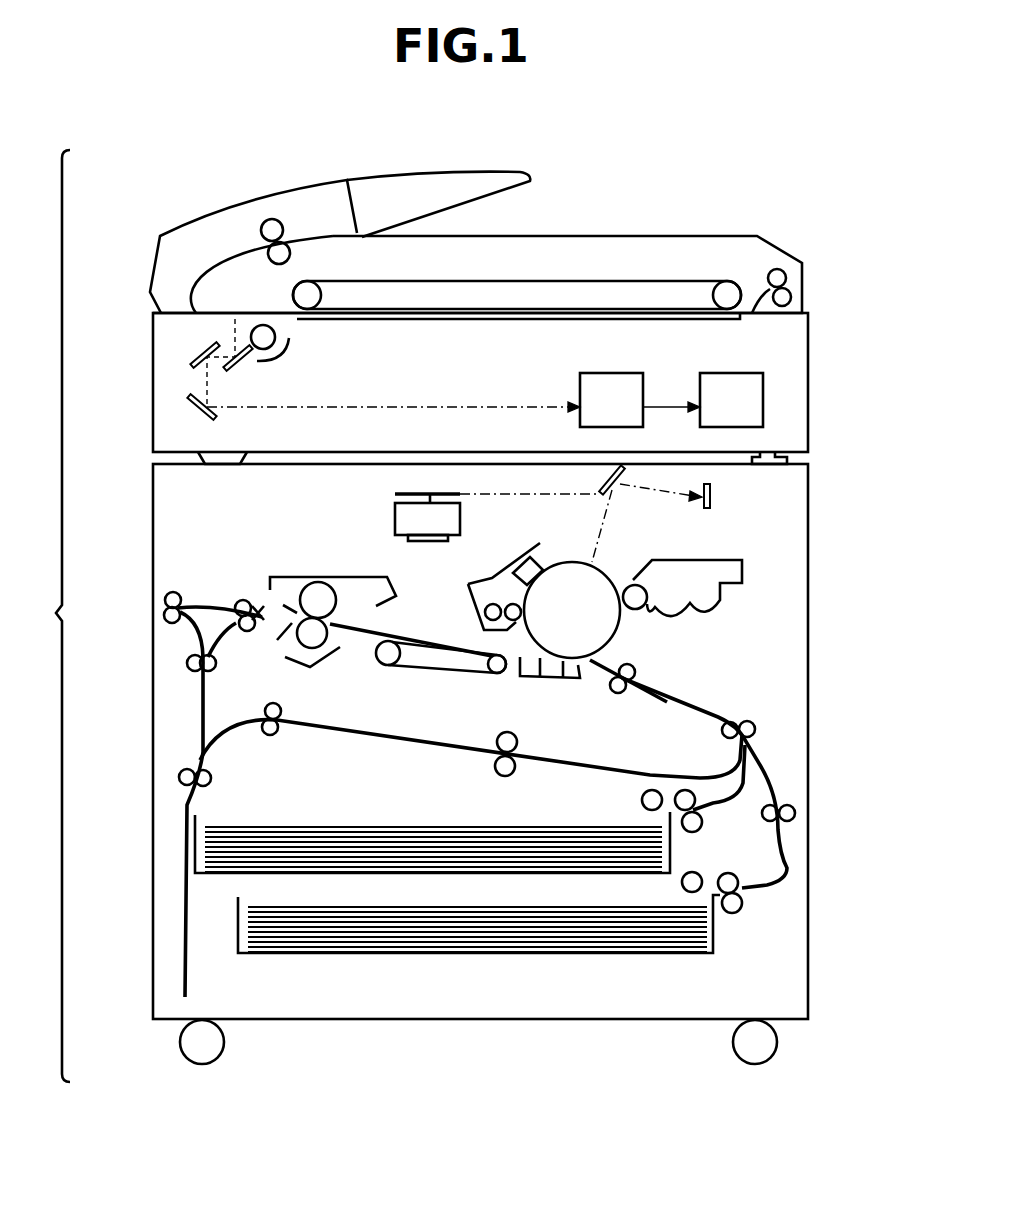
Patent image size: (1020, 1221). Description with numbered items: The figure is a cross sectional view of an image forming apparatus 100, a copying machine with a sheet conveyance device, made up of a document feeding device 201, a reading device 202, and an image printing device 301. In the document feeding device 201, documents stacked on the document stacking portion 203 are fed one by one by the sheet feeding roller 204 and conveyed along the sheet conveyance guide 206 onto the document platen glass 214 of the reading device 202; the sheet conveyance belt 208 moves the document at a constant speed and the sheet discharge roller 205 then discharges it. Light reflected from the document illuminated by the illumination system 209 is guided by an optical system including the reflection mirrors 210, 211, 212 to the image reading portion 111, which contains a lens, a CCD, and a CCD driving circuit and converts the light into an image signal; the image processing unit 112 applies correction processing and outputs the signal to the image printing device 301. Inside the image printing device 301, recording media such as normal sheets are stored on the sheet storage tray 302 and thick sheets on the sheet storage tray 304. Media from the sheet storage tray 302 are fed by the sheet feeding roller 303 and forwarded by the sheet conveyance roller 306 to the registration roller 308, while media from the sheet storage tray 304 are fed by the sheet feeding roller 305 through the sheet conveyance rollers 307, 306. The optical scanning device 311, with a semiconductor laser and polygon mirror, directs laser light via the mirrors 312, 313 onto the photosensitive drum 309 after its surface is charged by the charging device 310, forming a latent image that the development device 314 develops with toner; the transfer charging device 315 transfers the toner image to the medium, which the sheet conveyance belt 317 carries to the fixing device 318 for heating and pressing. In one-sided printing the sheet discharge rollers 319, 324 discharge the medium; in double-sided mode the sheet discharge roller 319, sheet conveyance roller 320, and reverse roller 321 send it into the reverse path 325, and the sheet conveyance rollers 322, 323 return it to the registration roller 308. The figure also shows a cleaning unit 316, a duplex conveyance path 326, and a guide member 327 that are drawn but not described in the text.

The image forming apparatus 100 is at (37, 616).
The document feeding device 201 is at (784, 230).
The reading device 202 is at (824, 357).
The document stacking portion 203 is at (427, 185).
The sheet feeding roller 204 is at (284, 248).
The sheet discharge roller 205 is at (788, 282).
The sheet conveyance guide 206 is at (205, 235).
The sheet conveyance belt 208 is at (618, 275).
The illumination system 209 is at (276, 333).
The reflection mirror 210 is at (245, 366).
The reflection mirror 211 is at (192, 353).
The reflection mirror 212 is at (195, 404).
The document platen glass 214 is at (455, 321).
The image reading portion 111 is at (613, 380).
The image processing unit 112 is at (731, 380).
The image printing device 301 is at (826, 488).
The sheet storage tray 302 is at (672, 843).
The sheet feeding roller 303 is at (641, 800).
The sheet storage tray 304 is at (715, 936).
The sheet feeding roller 305 is at (682, 884).
The sheet conveyance roller 306 is at (748, 722).
The sheet conveyance roller 307 is at (797, 812).
The registration roller 308 is at (640, 668).
The photosensitive drum 309 is at (600, 589).
The charging device 310 is at (541, 563).
The optical scanning device 311 is at (398, 517).
The mirror 312 is at (714, 497).
The mirror 313 is at (598, 481).
The development device 314 is at (698, 560).
The transfer charging device 315 is at (552, 681).
The cleaner 316 is at (485, 581).
The sheet conveyance belt 317 is at (420, 670).
The fixing device 318 is at (345, 577).
The sheet discharge roller 319 is at (245, 600).
The sheet conveyance roller 320 is at (215, 664).
The reverse roller 321 is at (212, 786).
The sheet conveyance roller 322 is at (276, 735).
The sheet conveyance roller 323 is at (506, 741).
The sheet discharge roller 324 is at (165, 598).
The reverse path 325 is at (180, 812).
The duplex conveyance path 326 is at (385, 741).
The flapper 327 is at (340, 604).